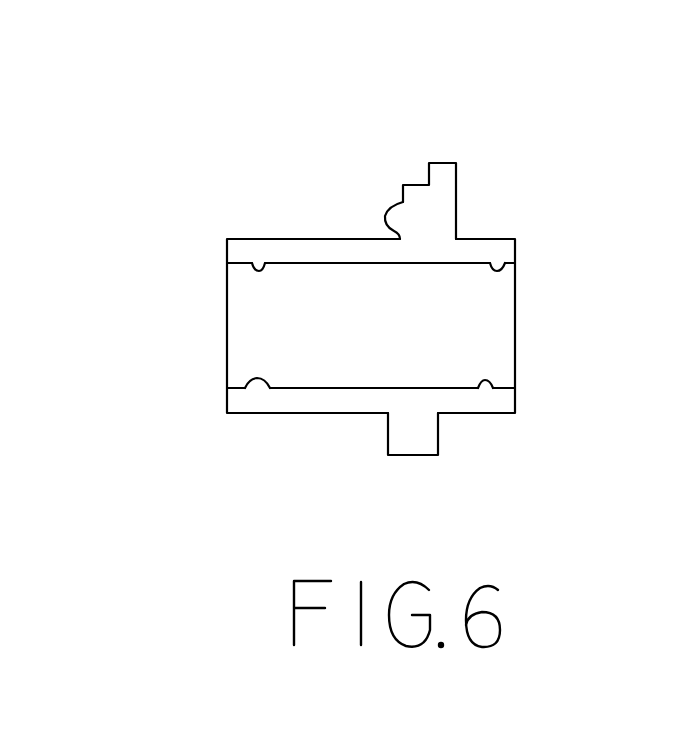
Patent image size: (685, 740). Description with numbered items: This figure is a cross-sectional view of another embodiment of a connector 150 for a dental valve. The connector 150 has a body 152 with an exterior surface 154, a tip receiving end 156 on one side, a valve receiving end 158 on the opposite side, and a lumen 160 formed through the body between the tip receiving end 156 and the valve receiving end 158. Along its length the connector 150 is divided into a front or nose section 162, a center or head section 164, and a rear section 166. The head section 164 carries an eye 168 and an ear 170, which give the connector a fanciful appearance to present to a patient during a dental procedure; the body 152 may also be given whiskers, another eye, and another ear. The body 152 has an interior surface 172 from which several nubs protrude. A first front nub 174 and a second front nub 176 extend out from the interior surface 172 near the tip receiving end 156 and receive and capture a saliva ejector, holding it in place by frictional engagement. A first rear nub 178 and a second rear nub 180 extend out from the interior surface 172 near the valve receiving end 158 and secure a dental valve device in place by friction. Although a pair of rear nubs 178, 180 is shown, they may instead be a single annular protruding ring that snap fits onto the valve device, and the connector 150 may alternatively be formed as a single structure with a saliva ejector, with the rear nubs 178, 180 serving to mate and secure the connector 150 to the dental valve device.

The connector 150 is at (332, 112).
The body 152 is at (512, 190).
The exterior surface 154 is at (285, 222).
The tip receiving end 156 is at (182, 319).
The valve receiving end 158 is at (573, 318).
The lumen 160 is at (337, 362).
The nose section 162 is at (323, 249).
The head section 164 is at (411, 437).
The rear section 166 is at (507, 400).
The eye 168 is at (390, 213).
The ear 170 is at (440, 162).
The interior surface 172 is at (360, 263).
The first front nub 174 is at (259, 272).
The second front nub 176 is at (258, 377).
The first rear nub 178 is at (494, 272).
The second rear nub 180 is at (474, 386).